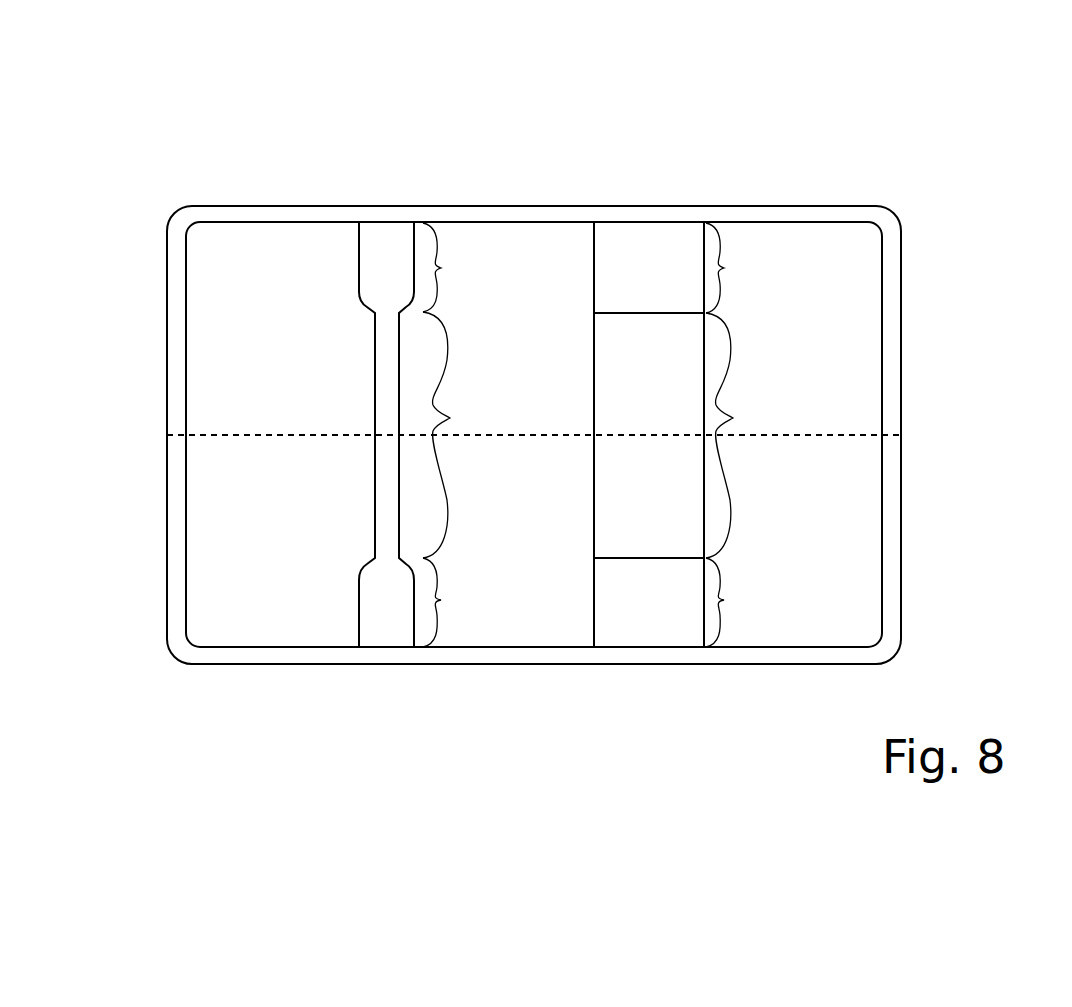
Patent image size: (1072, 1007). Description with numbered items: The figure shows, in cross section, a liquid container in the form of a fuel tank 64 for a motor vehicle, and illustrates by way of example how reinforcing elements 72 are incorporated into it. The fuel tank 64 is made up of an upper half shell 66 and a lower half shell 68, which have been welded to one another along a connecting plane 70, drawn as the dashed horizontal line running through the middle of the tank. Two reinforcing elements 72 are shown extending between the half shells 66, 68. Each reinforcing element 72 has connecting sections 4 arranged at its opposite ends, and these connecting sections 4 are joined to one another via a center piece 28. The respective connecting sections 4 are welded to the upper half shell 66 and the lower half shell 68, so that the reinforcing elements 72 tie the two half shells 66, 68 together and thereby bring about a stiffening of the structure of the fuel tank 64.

The liquid container 64 is at (603, 423).
The upper half shell 66 is at (781, 212).
The lower half shell 68 is at (555, 655).
The connecting plane 70 is at (804, 436).
The reinforcing element 72 is at (389, 242).
The connecting section 4 is at (584, 435).
The center piece 28 is at (594, 435).